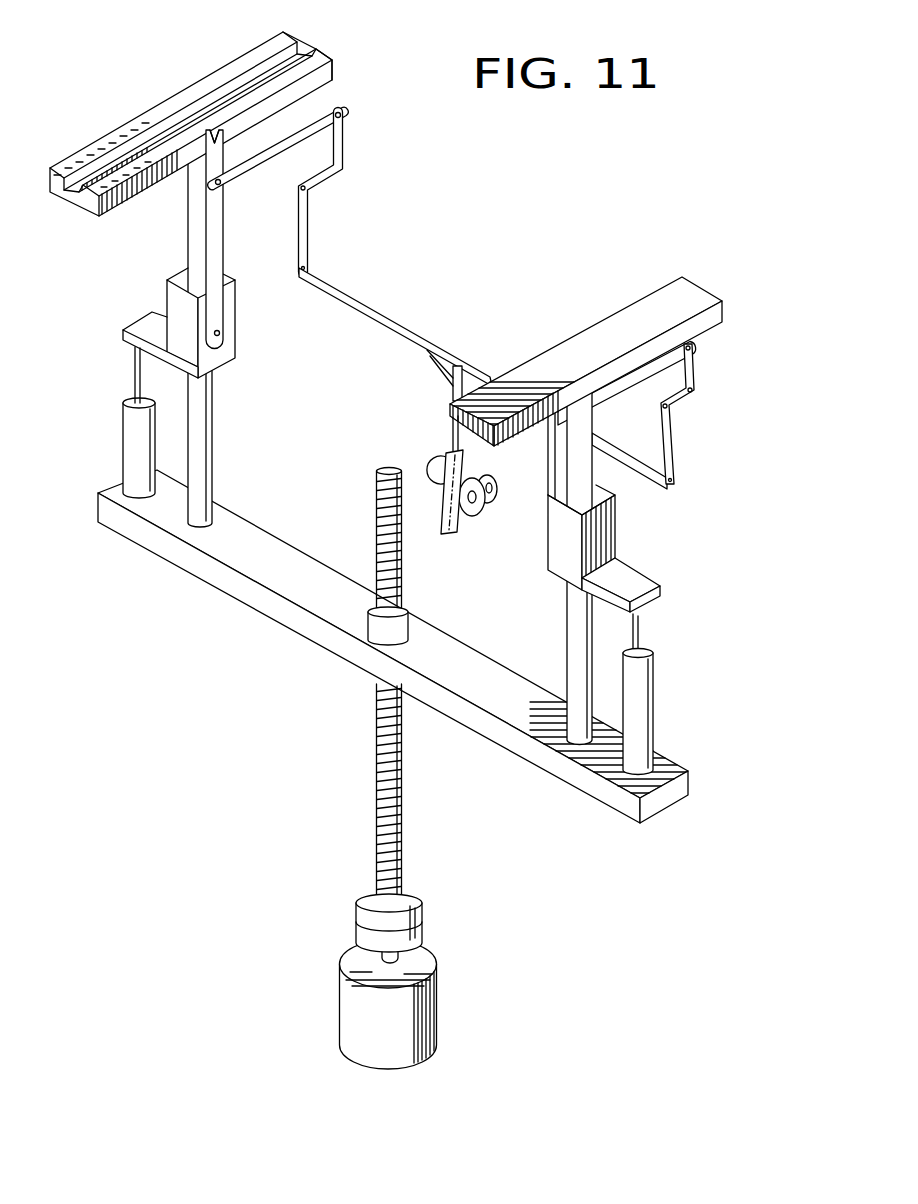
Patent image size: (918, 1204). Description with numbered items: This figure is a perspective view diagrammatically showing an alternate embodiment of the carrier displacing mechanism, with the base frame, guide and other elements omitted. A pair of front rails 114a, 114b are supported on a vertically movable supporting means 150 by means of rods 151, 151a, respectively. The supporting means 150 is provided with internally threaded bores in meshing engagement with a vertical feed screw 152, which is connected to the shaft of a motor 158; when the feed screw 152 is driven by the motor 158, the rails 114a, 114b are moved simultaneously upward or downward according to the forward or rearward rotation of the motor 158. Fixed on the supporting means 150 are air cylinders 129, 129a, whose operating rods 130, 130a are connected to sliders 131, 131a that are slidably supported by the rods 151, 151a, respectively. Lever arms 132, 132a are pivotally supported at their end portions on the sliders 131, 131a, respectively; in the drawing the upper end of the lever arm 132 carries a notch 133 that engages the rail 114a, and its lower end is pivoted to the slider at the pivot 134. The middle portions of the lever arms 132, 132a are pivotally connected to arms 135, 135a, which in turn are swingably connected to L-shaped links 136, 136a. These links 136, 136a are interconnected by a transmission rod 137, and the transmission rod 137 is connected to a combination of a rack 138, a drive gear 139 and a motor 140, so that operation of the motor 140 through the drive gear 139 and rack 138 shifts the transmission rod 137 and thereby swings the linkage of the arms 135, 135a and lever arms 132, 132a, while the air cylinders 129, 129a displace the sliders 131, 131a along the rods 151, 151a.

The front rail 114a is at (317, 77).
The front rail 114b is at (690, 293).
The air cylinder 129 is at (130, 433).
The air cylinder 129a is at (645, 705).
The operating rod 130 is at (137, 371).
The operating rod 130a is at (641, 628).
The slider 131 is at (147, 320).
The slider 131a is at (638, 582).
The lever arm 132 is at (217, 222).
The lever arm 132a is at (552, 456).
The notch 133 is at (222, 131).
The pivot 134 is at (222, 333).
The arm 135 is at (312, 135).
The arm 135a is at (635, 377).
The L-shaped link 136 is at (337, 152).
The L-shaped link 136a is at (697, 372).
The transmission rod 137 is at (380, 308).
The rack 138 is at (447, 513).
The drive gear 139 is at (478, 512).
The motor 140 is at (435, 460).
The supporting means 150 is at (253, 593).
The rod 151 is at (200, 418).
The rod 151a is at (578, 647).
The feed screw 152 is at (403, 598).
The motor 158 is at (420, 1010).